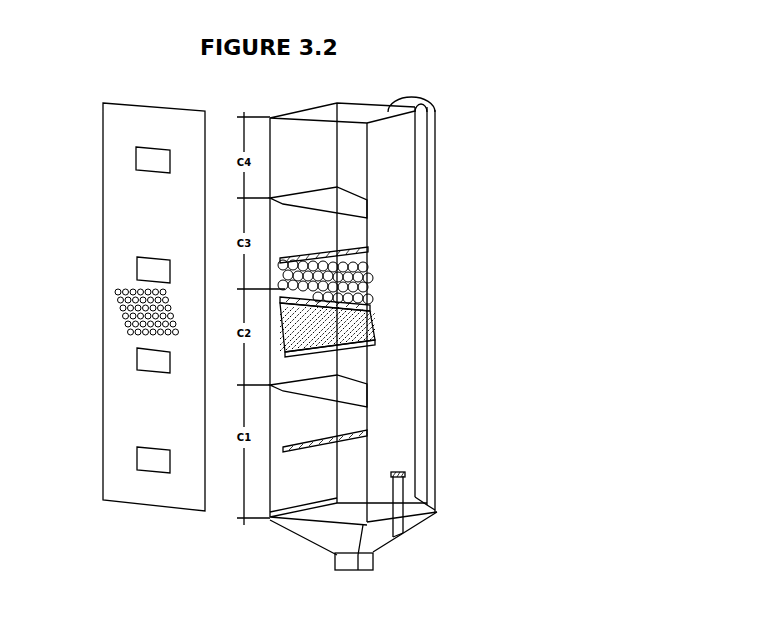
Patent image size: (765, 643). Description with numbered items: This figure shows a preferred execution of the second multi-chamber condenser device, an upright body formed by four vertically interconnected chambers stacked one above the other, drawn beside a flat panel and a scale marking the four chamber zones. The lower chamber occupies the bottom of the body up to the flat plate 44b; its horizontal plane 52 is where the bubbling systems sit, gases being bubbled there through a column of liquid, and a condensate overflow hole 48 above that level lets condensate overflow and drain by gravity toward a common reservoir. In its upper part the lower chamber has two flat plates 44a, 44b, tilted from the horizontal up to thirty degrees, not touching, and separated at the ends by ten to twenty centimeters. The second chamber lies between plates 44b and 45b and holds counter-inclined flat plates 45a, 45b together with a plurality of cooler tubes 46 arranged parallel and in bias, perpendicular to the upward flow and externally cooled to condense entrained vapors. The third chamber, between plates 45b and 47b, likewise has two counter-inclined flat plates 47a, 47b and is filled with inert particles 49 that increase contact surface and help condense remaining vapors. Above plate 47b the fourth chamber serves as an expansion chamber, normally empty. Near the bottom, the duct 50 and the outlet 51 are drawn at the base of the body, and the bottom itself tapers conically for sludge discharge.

The flat plate 44a is at (367, 433).
The flat plate 44b is at (360, 397).
The flat plate 45a is at (367, 340).
The flat plate 45b is at (363, 304).
The cooler tubes 46 is at (335, 332).
The flat plate 47a is at (363, 248).
The flat plate 47b is at (357, 211).
The condensate overflow hole 48 is at (432, 432).
The inert particles 49 is at (340, 280).
The outlet duct 50 is at (402, 473).
The outlet 51 is at (408, 507).
The horizontal plane 52 is at (343, 512).